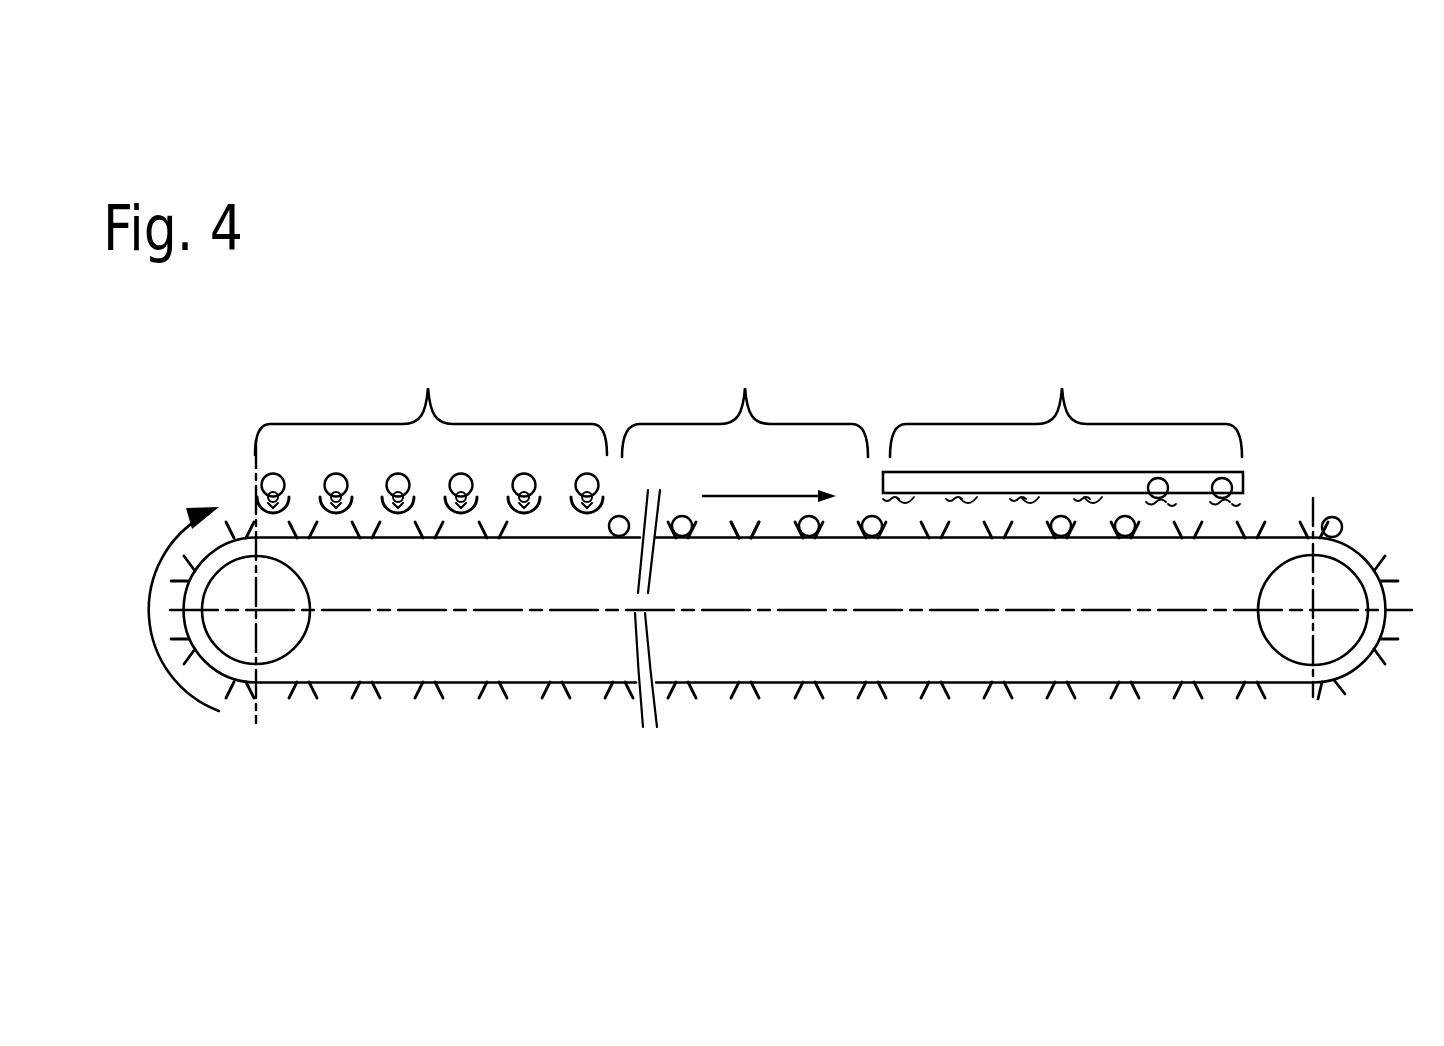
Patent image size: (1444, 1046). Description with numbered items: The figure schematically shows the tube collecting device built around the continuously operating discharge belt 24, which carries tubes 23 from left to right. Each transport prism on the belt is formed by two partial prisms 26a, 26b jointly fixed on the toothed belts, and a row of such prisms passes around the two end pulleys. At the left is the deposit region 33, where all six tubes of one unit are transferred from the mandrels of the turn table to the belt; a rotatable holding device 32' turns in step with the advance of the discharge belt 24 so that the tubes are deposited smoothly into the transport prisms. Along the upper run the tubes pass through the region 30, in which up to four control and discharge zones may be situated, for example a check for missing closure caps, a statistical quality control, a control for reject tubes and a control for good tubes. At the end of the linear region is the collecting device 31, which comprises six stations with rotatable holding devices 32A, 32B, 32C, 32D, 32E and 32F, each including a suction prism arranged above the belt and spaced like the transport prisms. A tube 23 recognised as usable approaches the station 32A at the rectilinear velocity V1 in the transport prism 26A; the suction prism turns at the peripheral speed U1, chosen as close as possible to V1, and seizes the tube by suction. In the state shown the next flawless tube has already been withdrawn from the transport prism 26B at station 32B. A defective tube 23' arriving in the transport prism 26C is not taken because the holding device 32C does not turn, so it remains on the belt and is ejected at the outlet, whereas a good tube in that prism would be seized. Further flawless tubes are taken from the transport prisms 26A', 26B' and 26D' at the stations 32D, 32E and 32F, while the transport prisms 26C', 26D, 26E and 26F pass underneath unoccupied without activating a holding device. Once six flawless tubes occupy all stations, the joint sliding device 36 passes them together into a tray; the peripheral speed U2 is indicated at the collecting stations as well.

The tube 23 is at (747, 518).
The defective tube 23' is at (1263, 539).
The discharge belt 24 is at (518, 661).
The partial prism 26a is at (548, 684).
The partial prism 26b is at (564, 685).
The transport prism 26A is at (1254, 548).
The transport prism 26B is at (1190, 548).
The transport prism 26C is at (1130, 548).
The transport prism 26D is at (1068, 548).
The transport prism 26E is at (1000, 539).
The transport prism 26F is at (937, 539).
The transport prism 26A' is at (881, 548).
The transport prism 26B' is at (818, 548).
The transport prism 26C' is at (754, 548).
The transport prism 26D' is at (692, 548).
The region of control and discharge zones 30 is at (745, 405).
The collecting device 31 is at (1066, 405).
The rotatable holding device 32' is at (218, 478).
The rotatable holding device 32A is at (1241, 508).
The rotatable holding device 32B is at (1175, 508).
The rotatable holding device 32C is at (1075, 503).
The rotatable holding device 32D is at (1012, 503).
The rotatable holding device 32E is at (948, 503).
The rotatable holding device 32F is at (887, 503).
The deposit region 33 is at (431, 404).
The joint sliding device 36 is at (1243, 479).
The peripheral speed U1 is at (598, 493).
The voltage U2 is at (1091, 503).
The rectilinear velocity V1 is at (769, 482).